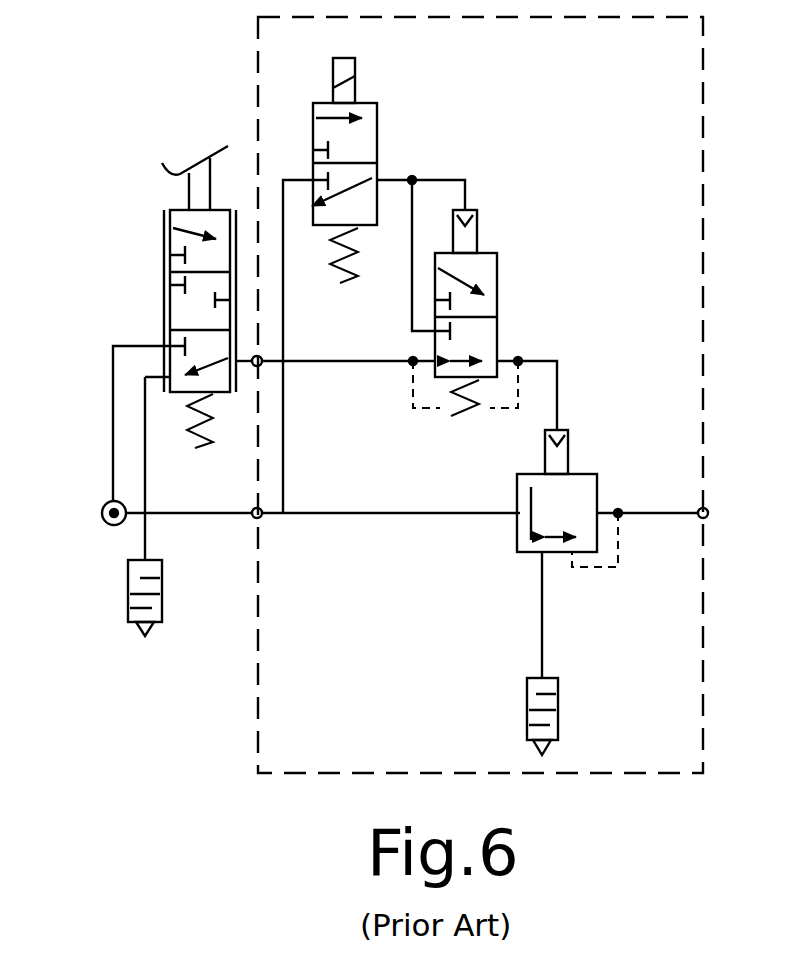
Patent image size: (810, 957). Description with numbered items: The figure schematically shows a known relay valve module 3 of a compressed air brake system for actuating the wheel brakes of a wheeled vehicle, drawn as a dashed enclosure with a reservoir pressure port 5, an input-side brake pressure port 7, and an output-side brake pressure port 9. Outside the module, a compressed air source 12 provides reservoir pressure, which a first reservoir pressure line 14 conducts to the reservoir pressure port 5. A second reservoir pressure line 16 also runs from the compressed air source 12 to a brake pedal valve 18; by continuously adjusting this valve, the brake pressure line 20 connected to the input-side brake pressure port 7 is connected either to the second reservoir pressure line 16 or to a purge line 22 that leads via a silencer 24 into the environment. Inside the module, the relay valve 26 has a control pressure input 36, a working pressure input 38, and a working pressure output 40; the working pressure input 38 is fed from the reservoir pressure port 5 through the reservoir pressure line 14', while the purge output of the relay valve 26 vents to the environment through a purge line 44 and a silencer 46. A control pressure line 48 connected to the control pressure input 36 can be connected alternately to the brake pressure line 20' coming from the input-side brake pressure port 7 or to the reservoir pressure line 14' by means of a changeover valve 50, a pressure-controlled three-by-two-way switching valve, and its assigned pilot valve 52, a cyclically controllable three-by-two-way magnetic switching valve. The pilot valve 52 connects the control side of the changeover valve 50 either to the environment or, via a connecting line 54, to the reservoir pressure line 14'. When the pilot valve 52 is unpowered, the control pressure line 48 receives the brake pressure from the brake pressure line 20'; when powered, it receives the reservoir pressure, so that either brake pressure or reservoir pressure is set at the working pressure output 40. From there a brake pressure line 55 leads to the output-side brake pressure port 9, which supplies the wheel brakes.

The relay valve module 3 is at (258, 741).
The reservoir pressure port 5 is at (262, 520).
The input-side brake pressure port 7 is at (263, 355).
The output-side brake pressure port 9 is at (710, 511).
The compressed air source 12 is at (110, 527).
The first reservoir pressure line 14 is at (189, 577).
The reservoir pressure line 14' is at (389, 577).
The second reservoir pressure line 16 is at (133, 342).
The brake pedal valve 18 is at (145, 228).
The brake pressure line 20 is at (288, 270).
The brake pressure line 20' is at (359, 319).
The purge line 22 is at (148, 470).
The silencer 24 is at (160, 605).
The relay valve 26 is at (582, 470).
The control pressure input 36 is at (545, 450).
The working pressure input 38 is at (515, 520).
The working pressure output 40 is at (600, 518).
The purge line 44 is at (540, 655).
The silencer 46 is at (527, 715).
The control pressure line 48 is at (538, 360).
The changeover valve 50 is at (527, 270).
The pilot valve 52 is at (400, 120).
The connecting line 54 is at (283, 423).
The brake pressure line 55 is at (663, 515).